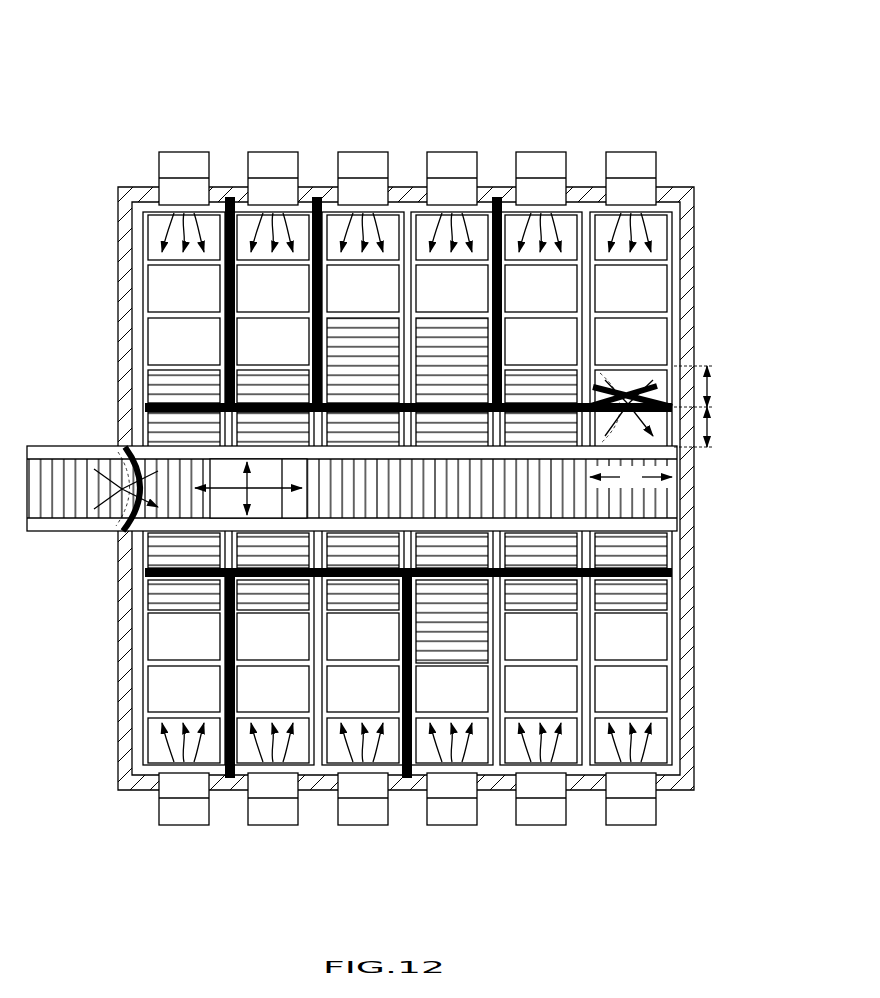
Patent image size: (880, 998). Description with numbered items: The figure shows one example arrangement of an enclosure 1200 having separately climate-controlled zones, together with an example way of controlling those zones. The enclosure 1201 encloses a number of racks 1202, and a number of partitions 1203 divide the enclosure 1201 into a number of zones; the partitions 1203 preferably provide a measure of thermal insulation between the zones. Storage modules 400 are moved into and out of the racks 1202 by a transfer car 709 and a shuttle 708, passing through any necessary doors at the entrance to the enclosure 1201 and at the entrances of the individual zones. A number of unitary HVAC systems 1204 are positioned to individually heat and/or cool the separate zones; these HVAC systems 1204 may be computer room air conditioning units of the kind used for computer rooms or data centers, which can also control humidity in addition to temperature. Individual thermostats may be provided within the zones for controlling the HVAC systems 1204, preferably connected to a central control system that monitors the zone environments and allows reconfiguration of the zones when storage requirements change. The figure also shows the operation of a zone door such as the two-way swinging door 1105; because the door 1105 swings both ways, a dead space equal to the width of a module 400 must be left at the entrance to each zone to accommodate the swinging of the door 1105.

The enclosure 1200 is at (660, 60).
The enclosure 1201 is at (118, 216).
The racks 1202 is at (262, 383).
The partitions 1203 is at (231, 197).
The unitary HVAC systems 1204 is at (197, 152).
The storage module 400 is at (169, 298).
The shuttle 708 is at (212, 513).
The transfer car 709 is at (200, 467).
The two-way swinging door 1105 is at (660, 368).